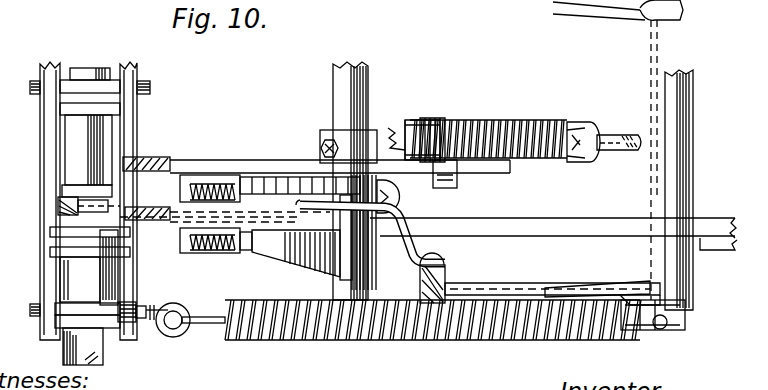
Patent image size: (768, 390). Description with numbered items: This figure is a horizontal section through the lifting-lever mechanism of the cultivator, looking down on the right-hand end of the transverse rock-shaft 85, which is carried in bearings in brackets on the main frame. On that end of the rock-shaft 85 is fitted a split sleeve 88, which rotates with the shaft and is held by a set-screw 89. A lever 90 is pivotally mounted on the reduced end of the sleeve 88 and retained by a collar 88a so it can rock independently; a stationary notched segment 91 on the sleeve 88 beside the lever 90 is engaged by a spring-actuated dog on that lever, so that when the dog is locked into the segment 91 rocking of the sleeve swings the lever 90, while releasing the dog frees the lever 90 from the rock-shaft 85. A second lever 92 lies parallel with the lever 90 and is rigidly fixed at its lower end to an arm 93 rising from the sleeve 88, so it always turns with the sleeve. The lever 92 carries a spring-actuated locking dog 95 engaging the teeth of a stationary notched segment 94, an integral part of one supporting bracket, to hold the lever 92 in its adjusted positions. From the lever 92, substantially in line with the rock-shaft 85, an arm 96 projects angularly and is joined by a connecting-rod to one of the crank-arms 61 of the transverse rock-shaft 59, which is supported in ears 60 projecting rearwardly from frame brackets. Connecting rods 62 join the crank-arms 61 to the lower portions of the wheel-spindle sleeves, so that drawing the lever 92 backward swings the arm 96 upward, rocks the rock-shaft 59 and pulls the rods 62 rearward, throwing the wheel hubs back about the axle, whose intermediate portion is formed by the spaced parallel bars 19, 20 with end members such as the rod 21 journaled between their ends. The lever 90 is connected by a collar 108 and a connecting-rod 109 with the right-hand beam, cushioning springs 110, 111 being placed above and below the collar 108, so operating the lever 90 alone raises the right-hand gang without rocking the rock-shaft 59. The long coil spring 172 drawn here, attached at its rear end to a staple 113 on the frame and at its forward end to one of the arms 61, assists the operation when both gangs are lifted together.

The parallel bar 19 is at (126, 283).
The parallel bar 20 is at (48, 276).
The rod 21 is at (100, 150).
The rock-shaft 59 is at (698, 193).
The ear 60 is at (657, 252).
The crank-arm 61 is at (683, 306).
The connecting rod 62 is at (625, 283).
The rock-shaft 85 is at (366, 97).
The split sleeve 88 is at (352, 262).
The collar 88a is at (324, 140).
The set-screw 89 is at (320, 150).
The lever 90 is at (215, 167).
The stationary notched segment 91 is at (271, 184).
The lever 92 is at (201, 212).
The arm 93 is at (567, 224).
The stationary notched segment 94 is at (300, 248).
The spring-actuated locking dog 95 is at (243, 252).
The arm 96 is at (405, 263).
The collar 108 is at (442, 118).
The connecting-rod 109 is at (623, 140).
The cushioning spring 110 is at (529, 126).
The cushioning spring 111 is at (413, 119).
The staple 113 is at (186, 331).
The spring 172 is at (405, 342).